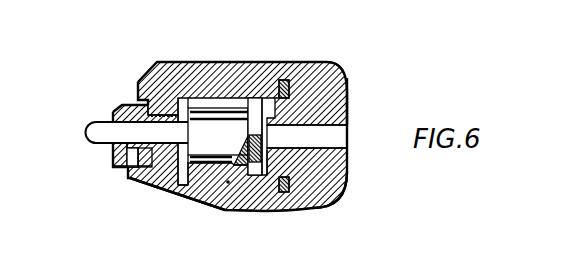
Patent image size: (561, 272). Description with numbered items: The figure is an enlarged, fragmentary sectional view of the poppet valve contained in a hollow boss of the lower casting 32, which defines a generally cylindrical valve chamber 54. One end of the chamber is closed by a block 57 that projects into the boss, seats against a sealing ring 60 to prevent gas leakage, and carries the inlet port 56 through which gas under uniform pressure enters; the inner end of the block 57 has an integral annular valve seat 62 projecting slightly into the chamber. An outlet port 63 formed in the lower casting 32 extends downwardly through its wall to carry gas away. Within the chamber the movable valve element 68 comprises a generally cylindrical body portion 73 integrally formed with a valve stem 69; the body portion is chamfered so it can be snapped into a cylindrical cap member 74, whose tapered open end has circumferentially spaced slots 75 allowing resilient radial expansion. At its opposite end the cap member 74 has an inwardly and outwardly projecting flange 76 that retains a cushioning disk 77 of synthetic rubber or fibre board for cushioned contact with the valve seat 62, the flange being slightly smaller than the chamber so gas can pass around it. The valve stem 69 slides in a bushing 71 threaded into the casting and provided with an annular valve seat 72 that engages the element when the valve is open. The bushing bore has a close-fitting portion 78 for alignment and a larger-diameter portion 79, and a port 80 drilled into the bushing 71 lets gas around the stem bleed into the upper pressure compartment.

The lower casting 32 is at (247, 60).
The valve chamber 54 is at (190, 104).
The inlet port 56 is at (347, 130).
The block 57 is at (349, 93).
The sealing ring 60 is at (284, 79).
The valve seat 62 is at (342, 188).
The outlet port 63 is at (165, 189).
The movable valve element 68 is at (228, 183).
The valve stem 69 is at (84, 134).
The bushing 71 is at (120, 105).
The valve seat 72 is at (182, 112).
The body portion 73 is at (243, 166).
The cap member 74 is at (210, 166).
The slots 75 is at (203, 112).
The flange 76 is at (268, 148).
The cushioning disk 77 is at (285, 194).
The internal bore 78 is at (112, 160).
The bore portion of larger diameter 79 is at (152, 168).
The port 80 is at (122, 167).